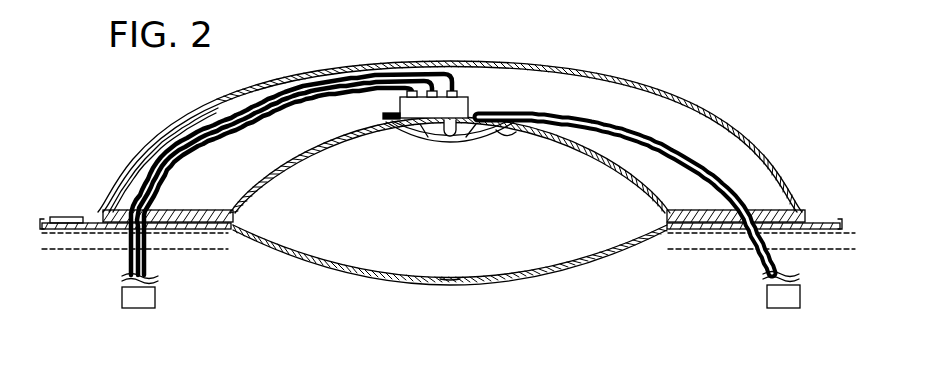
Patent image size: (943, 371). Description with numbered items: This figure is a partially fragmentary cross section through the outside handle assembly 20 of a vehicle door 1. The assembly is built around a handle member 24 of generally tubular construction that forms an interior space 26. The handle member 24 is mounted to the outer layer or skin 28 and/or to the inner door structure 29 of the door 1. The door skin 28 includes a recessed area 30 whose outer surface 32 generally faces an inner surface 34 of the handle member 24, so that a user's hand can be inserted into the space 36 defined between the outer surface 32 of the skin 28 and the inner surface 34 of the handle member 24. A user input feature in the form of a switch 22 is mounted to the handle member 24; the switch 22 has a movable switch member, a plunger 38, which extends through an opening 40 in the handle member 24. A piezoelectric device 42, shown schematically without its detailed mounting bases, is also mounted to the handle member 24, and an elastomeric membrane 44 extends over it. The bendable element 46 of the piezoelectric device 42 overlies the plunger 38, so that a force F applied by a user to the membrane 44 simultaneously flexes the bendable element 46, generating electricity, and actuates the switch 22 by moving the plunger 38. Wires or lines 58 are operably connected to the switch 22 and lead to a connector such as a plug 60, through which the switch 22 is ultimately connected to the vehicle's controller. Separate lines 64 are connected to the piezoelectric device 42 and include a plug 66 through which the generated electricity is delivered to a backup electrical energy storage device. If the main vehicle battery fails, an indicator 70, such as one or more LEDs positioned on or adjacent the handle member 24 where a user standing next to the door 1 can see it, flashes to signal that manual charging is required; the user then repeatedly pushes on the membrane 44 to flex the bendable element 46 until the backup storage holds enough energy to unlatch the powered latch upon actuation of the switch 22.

The door 1 is at (775, 97).
The outside handle assembly 20 is at (693, 110).
The switch 22 is at (467, 113).
The handle member 24 is at (597, 82).
The interior space 26 is at (705, 157).
The outer layer or skin 28 is at (823, 222).
The inner door structure 29 is at (92, 250).
The recessed area 30 is at (437, 277).
The outer surface 32 is at (465, 277).
The inner surface 34 is at (375, 134).
The space 36 is at (463, 223).
The plunger 38 is at (428, 138).
The opening 40 is at (463, 140).
The piezoelectric device 42 is at (395, 116).
The elastomeric membrane 44 is at (500, 137).
The bendable element 46 is at (446, 140).
The force F is at (454, 150).
The wires or lines 58 is at (143, 175).
The plug 60 is at (137, 308).
The lines 64 is at (623, 130).
The plug 66 is at (767, 292).
The indicator 70 is at (68, 215).